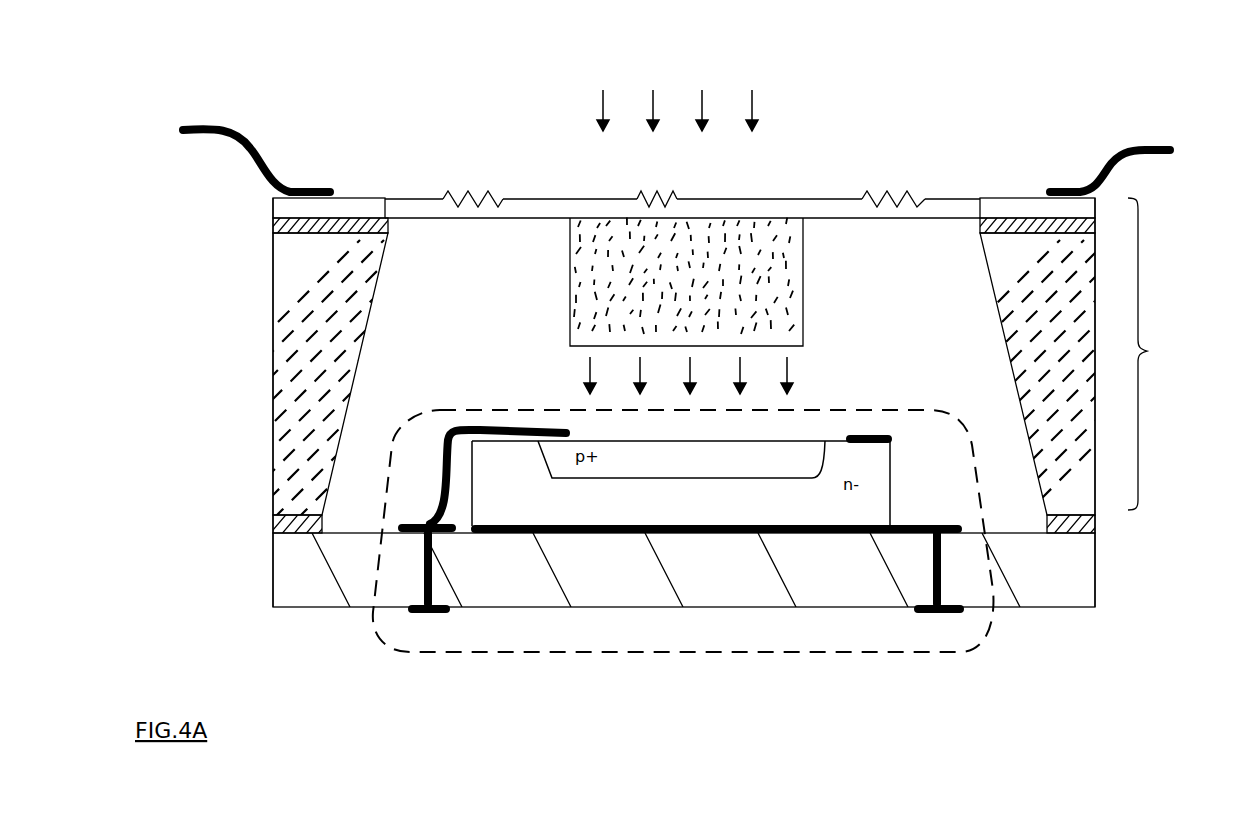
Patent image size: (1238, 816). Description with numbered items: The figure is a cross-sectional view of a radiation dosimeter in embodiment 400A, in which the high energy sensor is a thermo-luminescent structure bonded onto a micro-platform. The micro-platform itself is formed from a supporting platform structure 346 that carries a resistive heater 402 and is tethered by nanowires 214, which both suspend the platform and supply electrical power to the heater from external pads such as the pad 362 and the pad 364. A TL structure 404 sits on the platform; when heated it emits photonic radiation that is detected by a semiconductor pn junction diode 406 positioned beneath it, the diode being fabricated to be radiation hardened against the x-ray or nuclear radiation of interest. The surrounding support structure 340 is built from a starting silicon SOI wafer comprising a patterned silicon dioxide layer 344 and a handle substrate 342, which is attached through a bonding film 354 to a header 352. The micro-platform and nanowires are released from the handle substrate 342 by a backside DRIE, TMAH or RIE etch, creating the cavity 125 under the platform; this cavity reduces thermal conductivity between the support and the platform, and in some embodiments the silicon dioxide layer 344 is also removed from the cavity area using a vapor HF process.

The dosimeter embodiment 400A is at (581, 325).
The supporting platform structure 346 is at (273, 203).
The nanowires 214 is at (458, 198).
The heater 402 is at (672, 198).
The silicon dioxide layer 344 is at (273, 225).
The handle substrate 342 is at (273, 323).
The support structure 340 is at (1160, 354).
The cavity 125 is at (776, 366).
The TL structure 404 is at (803, 303).
The bonding film 354 is at (275, 515).
The header 352 is at (273, 573).
The semiconductor pn junction diode 406 is at (882, 658).
The pad 362 is at (353, 345).
The positive heater voltage lead 364 is at (854, 360).